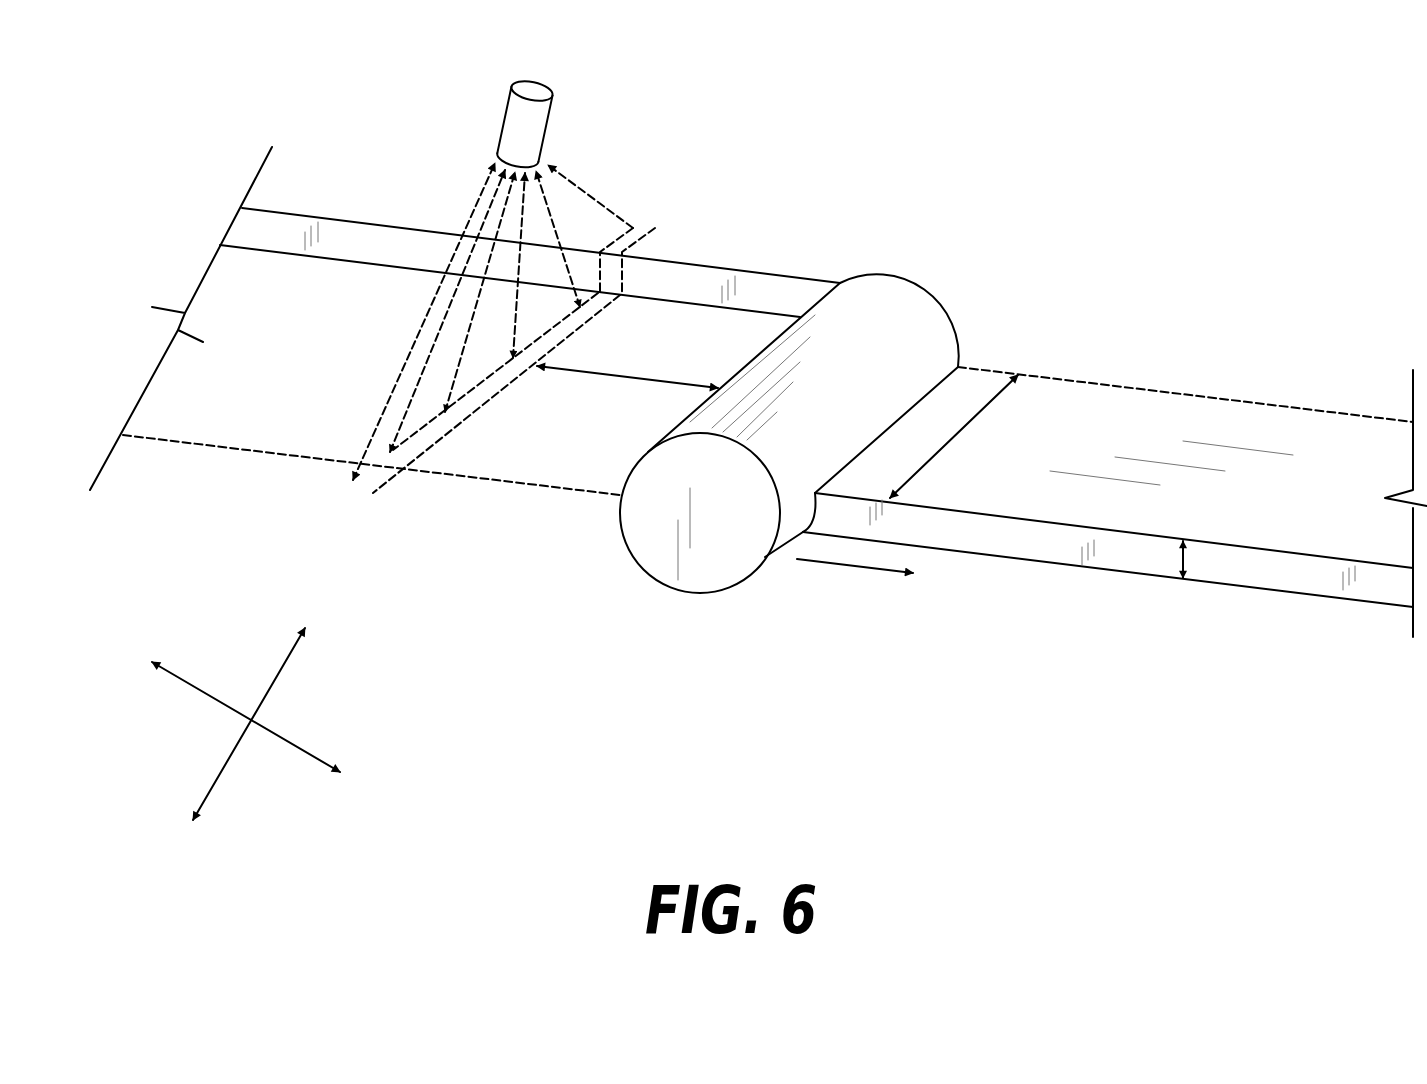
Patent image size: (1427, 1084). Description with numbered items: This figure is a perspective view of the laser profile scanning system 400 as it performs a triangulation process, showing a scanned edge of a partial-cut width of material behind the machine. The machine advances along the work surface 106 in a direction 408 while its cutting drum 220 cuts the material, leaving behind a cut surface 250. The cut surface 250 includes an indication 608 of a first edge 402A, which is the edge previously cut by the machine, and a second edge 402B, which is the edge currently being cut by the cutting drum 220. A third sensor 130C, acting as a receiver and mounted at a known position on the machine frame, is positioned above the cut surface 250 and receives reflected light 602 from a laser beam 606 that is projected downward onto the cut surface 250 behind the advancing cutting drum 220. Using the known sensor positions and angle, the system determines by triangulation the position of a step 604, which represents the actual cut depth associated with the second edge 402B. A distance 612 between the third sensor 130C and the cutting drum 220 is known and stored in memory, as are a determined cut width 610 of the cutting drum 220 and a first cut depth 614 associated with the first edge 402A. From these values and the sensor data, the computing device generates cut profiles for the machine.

The laser profile scanning system 400 is at (1218, 118).
The work surface 106 is at (1317, 493).
The third sensor 130C is at (543, 116).
The cutting drum 220 is at (903, 305).
The cut surface 250 is at (237, 420).
The first edge 402A is at (1385, 593).
The second edge 402B is at (312, 210).
The direction 408 is at (852, 568).
The reflected light 602 is at (425, 320).
The step 604 is at (624, 262).
The laser beam 606 is at (497, 395).
The indication 608 is at (431, 472).
The cut width 610 is at (953, 432).
The distance 612 is at (627, 378).
The first cut depth 614 is at (1178, 560).